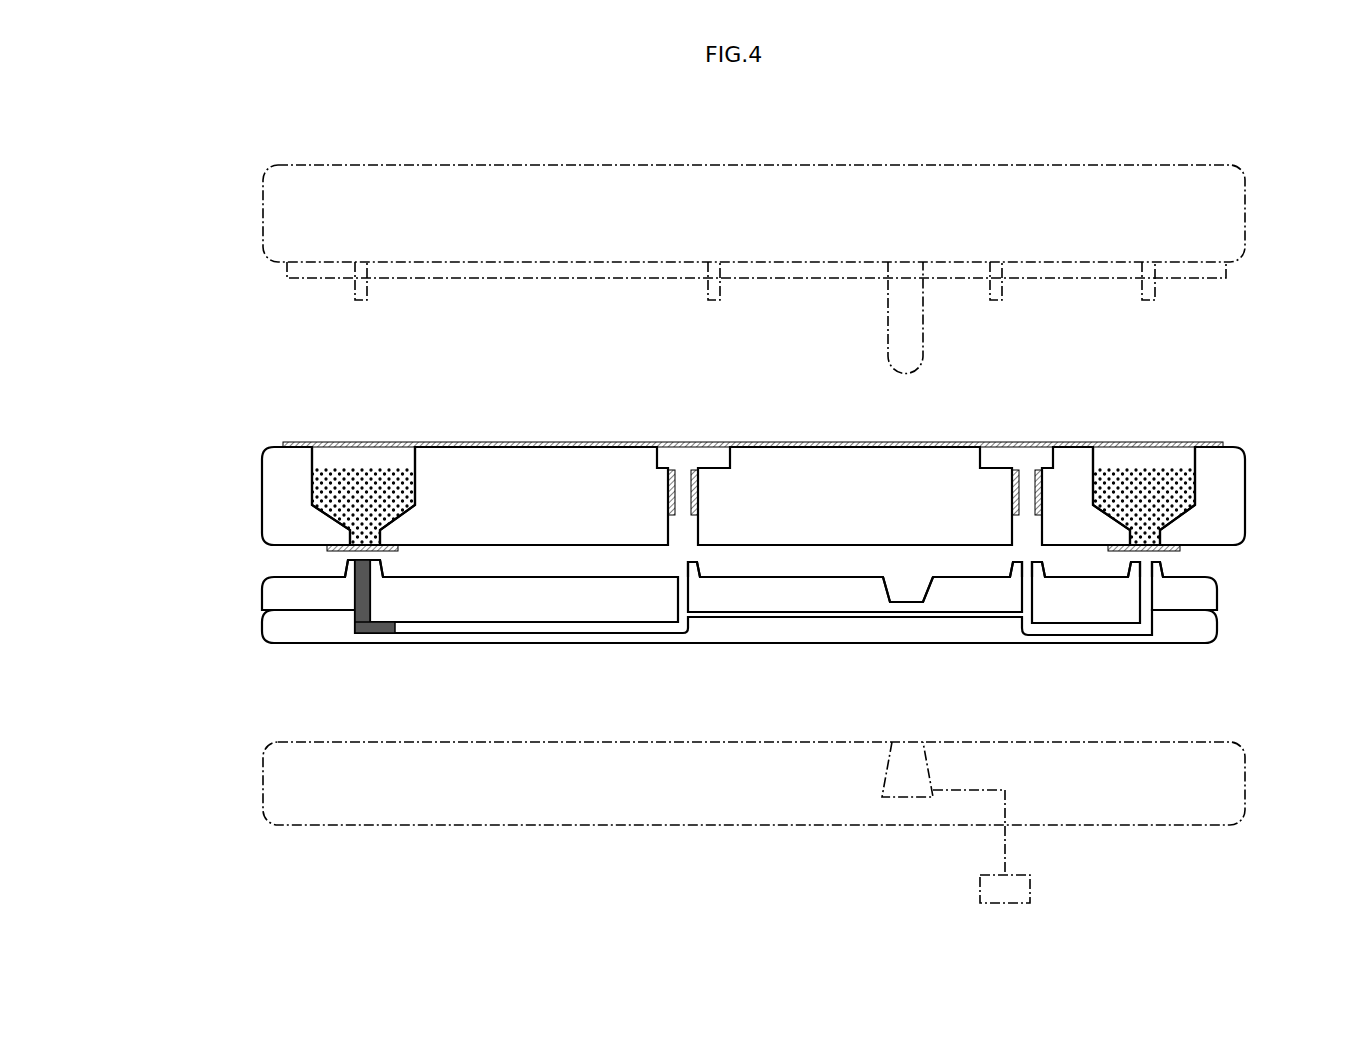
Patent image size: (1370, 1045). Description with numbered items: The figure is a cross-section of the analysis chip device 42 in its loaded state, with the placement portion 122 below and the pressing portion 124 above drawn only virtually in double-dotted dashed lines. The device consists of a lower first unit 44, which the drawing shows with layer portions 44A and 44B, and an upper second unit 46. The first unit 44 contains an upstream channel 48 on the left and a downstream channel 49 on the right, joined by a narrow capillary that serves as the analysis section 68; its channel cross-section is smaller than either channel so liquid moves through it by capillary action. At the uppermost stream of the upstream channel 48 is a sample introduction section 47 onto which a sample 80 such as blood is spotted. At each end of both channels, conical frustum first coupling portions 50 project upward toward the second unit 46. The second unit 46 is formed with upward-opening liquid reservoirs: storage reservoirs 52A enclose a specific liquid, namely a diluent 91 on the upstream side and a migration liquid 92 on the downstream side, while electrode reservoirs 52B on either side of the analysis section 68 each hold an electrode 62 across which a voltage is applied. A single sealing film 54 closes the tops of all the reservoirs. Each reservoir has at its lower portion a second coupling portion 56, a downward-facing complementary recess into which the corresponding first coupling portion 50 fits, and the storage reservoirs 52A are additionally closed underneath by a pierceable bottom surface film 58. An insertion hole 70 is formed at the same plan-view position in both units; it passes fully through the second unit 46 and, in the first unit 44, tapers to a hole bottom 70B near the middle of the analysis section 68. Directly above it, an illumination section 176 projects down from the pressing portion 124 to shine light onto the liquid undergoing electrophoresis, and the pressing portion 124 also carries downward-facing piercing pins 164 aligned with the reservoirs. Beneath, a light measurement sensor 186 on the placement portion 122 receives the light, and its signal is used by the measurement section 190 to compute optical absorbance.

The pressing portion 124 is at (256, 208).
The piercing pins 164 is at (367, 296).
The illumination section 176 is at (878, 338).
The analysis chip device 42 is at (140, 535).
The second unit 46 is at (256, 518).
The sealing film 54 is at (1215, 442).
The storage reservoir 52A is at (305, 447).
The electrode reservoir 52B is at (663, 447).
The insertion hole 70 is at (886, 466).
The hole bottom 70B is at (916, 600).
The diluent 91 is at (330, 480).
The migration liquid 92 is at (1180, 485).
The electrode 62 is at (698, 483).
The second coupling portion 56 is at (338, 542).
The bottom surface film 58 is at (375, 532).
The first unit 44 is at (185, 582).
The upper layer of lower substrate 44A is at (718, 572).
The lower layer of lower substrate 44B is at (260, 626).
The analysis section 68 is at (800, 610).
The first coupling portion 50 is at (346, 567).
The upstream channel 48 is at (447, 634).
The downstream channel 49 is at (1103, 632).
The sample introduction section 47 is at (358, 600).
The sample 80 is at (368, 635).
The placement portion 122 is at (256, 777).
The light measurement sensor 186 is at (915, 797).
The measurement section 190 is at (1032, 890).